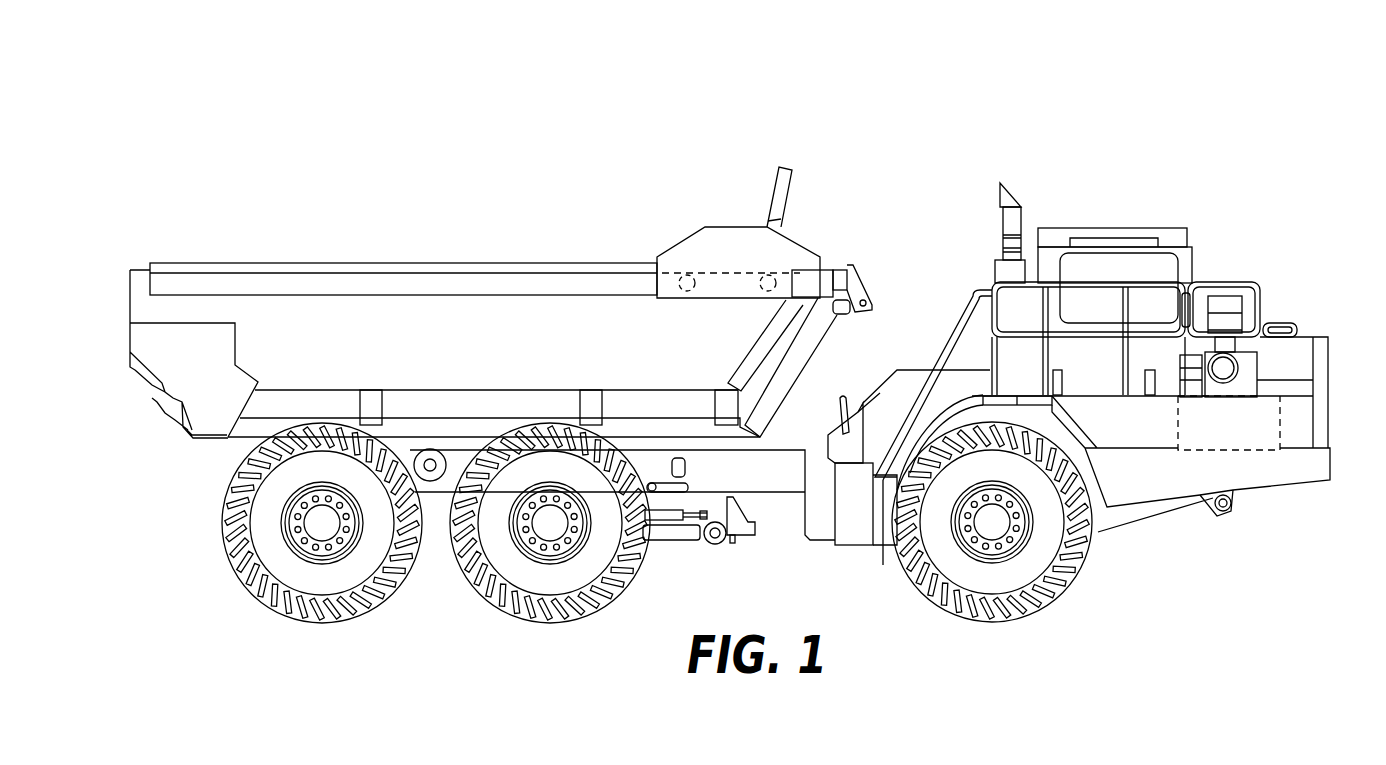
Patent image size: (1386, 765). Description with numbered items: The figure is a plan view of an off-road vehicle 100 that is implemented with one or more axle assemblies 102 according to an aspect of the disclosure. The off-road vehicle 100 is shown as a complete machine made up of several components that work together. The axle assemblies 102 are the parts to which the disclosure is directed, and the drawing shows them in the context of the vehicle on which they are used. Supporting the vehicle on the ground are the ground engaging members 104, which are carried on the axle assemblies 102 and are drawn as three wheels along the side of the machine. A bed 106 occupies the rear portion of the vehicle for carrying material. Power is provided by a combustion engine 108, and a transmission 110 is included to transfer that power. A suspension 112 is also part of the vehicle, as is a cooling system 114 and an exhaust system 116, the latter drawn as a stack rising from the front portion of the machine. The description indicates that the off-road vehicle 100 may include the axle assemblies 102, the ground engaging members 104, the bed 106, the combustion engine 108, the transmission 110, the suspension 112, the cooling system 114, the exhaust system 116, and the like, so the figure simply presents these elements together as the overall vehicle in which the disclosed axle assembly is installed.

The off-road vehicle 100 is at (740, 372).
The axle assembly 102 is at (322, 535).
The ground engaging member 104 is at (290, 605).
The bed 106 is at (533, 283).
The combustion engine 108 is at (1270, 450).
The transmission 110 is at (737, 520).
The suspension 112 is at (430, 481).
The cooling system 114 is at (1315, 380).
The exhaust system 116 is at (1010, 202).